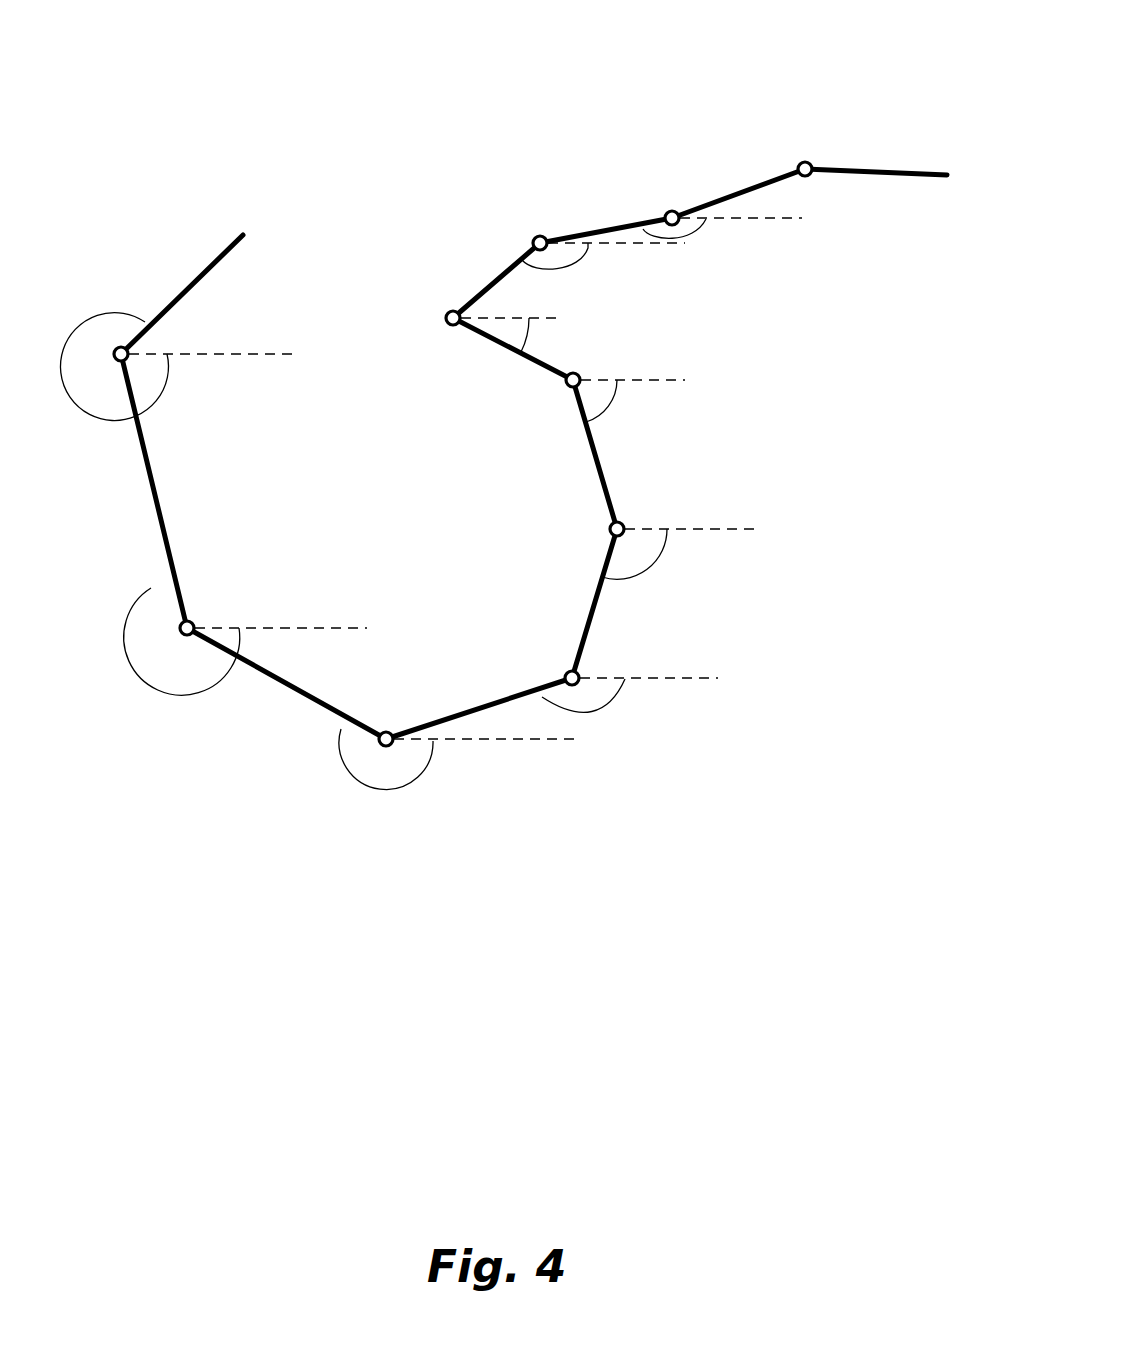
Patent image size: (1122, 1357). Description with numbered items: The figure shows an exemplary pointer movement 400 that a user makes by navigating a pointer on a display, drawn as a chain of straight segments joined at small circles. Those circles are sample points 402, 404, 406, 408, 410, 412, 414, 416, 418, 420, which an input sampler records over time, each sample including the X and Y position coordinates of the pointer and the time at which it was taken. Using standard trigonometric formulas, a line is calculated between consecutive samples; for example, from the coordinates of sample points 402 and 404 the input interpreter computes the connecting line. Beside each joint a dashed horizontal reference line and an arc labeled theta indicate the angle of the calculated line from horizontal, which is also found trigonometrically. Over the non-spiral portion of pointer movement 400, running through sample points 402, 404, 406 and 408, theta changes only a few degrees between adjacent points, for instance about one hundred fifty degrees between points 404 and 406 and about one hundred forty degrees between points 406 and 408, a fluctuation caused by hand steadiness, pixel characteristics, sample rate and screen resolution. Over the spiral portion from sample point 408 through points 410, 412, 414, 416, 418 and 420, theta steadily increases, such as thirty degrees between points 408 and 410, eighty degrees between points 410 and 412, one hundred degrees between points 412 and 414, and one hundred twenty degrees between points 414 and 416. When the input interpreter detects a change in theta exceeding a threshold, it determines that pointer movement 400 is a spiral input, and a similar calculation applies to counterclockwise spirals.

The pointer movement 400 is at (297, 70).
The sample point 402 is at (805, 161).
The sample point 404 is at (672, 210).
The sample point 406 is at (540, 237).
The sample point 408 is at (445, 318).
The sample point 410 is at (563, 380).
The sample point 412 is at (608, 524).
The sample point 414 is at (563, 667).
The sample point 416 is at (387, 730).
The sample point 418 is at (197, 618).
The sample point 420 is at (130, 353).